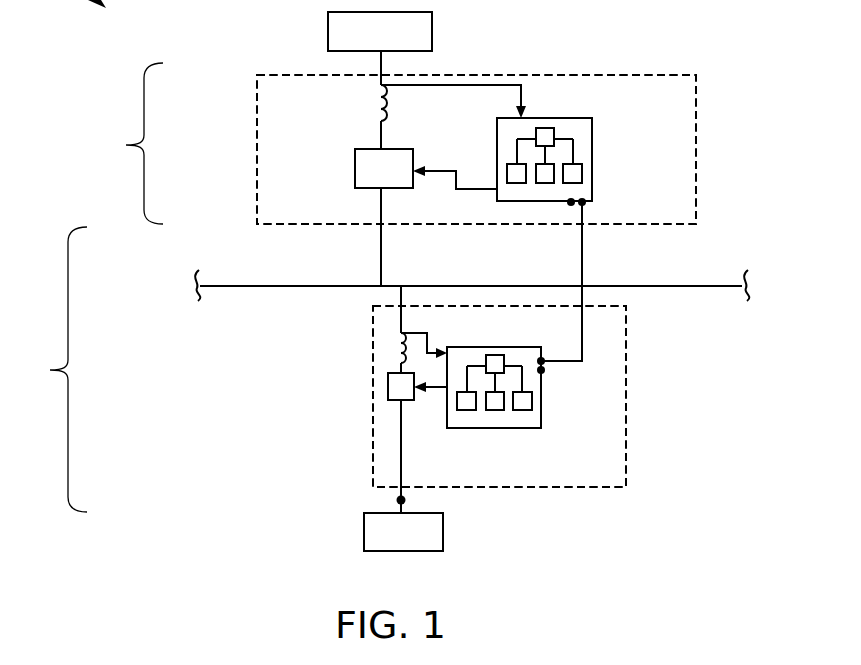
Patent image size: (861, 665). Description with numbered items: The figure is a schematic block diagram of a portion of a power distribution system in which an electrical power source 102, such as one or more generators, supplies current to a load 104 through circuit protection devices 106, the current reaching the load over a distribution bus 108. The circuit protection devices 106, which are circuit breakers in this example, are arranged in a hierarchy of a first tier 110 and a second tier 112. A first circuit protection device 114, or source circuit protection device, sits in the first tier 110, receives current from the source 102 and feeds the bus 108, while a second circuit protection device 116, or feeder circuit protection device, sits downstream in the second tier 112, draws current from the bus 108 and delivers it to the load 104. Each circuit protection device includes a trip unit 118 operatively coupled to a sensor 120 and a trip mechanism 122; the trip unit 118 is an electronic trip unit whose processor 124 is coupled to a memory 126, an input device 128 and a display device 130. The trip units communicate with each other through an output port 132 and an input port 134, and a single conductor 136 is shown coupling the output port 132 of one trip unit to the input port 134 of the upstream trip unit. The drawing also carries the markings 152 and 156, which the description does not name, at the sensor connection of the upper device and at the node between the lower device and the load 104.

The electrical power source 102 is at (361, 42).
The load 104 is at (383, 543).
The circuit protection devices 106 is at (476, 281).
The distribution bus 108 is at (300, 284).
The first tier 110 is at (123, 143).
The second tier 112 is at (47, 369).
The first circuit protection device 114 is at (696, 112).
The second circuit protection device 116 is at (373, 460).
The trip unit 118 is at (592, 141).
The sensor 120 is at (375, 91).
The trip mechanism 122 is at (355, 168).
The processor 124 is at (543, 128).
The memory 126 is at (507, 173).
The input device 128 is at (547, 177).
The display device 130 is at (575, 175).
The output port 132 is at (570, 206).
The input port 134 is at (585, 205).
The conductor 136 is at (584, 250).
The sensing line 152 is at (418, 86).
The output node 156 is at (405, 500).